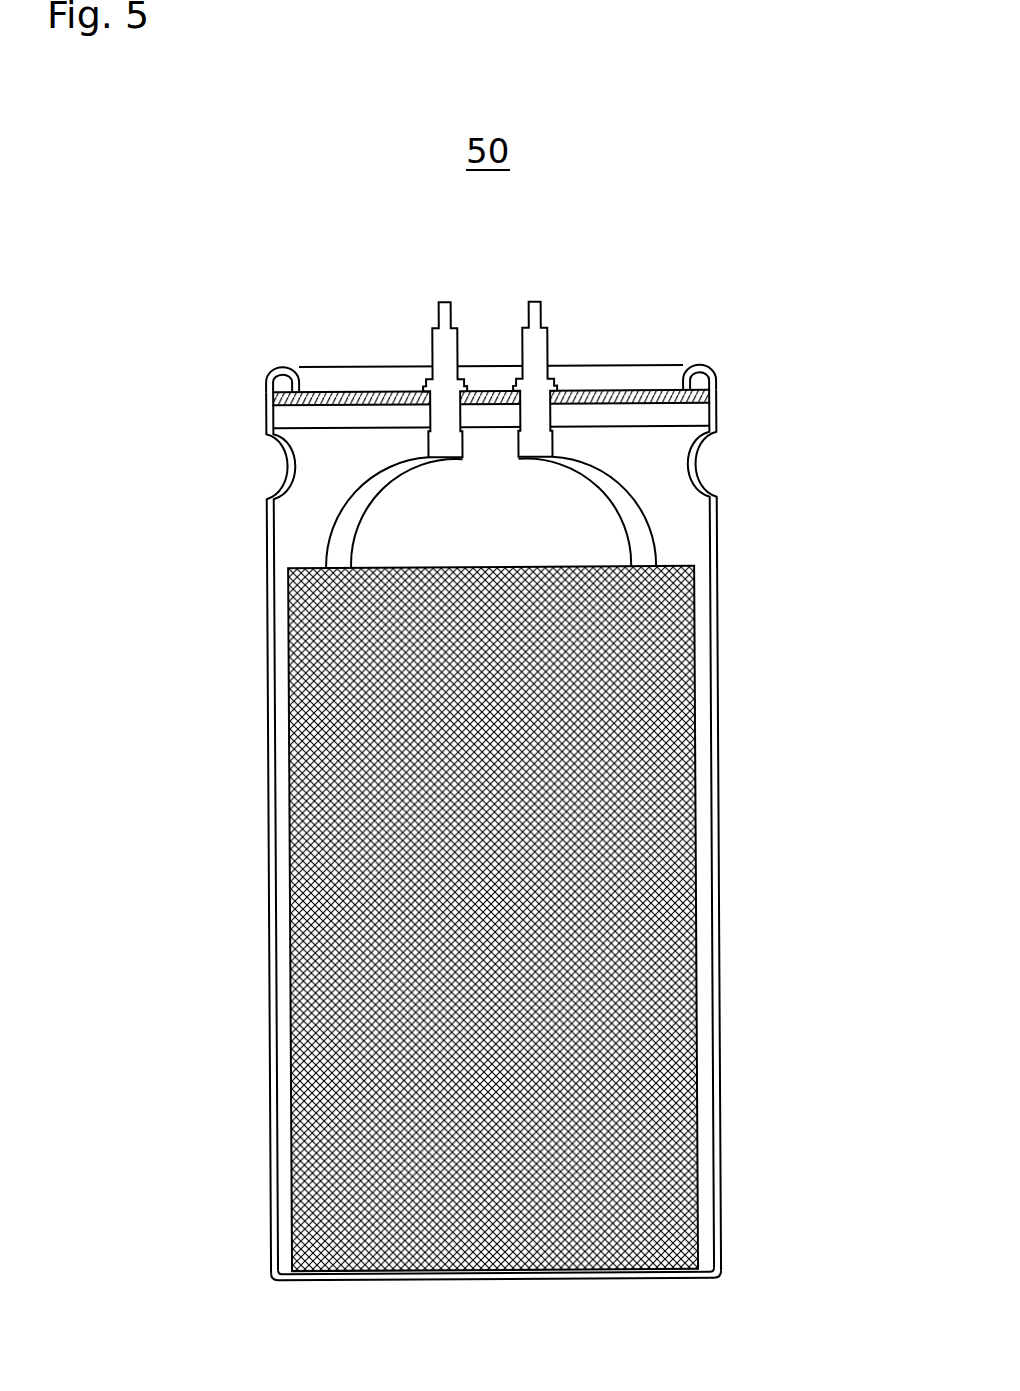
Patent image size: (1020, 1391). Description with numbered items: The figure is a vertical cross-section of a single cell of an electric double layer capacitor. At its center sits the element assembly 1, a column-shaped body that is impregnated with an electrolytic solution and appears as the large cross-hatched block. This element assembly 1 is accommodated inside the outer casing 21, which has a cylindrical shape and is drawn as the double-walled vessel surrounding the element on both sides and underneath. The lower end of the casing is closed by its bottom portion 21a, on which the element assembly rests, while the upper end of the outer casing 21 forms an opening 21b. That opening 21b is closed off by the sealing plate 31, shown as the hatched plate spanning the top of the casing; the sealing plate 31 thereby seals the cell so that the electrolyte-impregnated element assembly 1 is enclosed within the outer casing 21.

The element assembly 1 is at (677, 1025).
The outer casing 21 is at (718, 813).
The bottom portion 21a is at (492, 1282).
The opening 21b is at (345, 366).
The sealing plate 31 is at (645, 389).